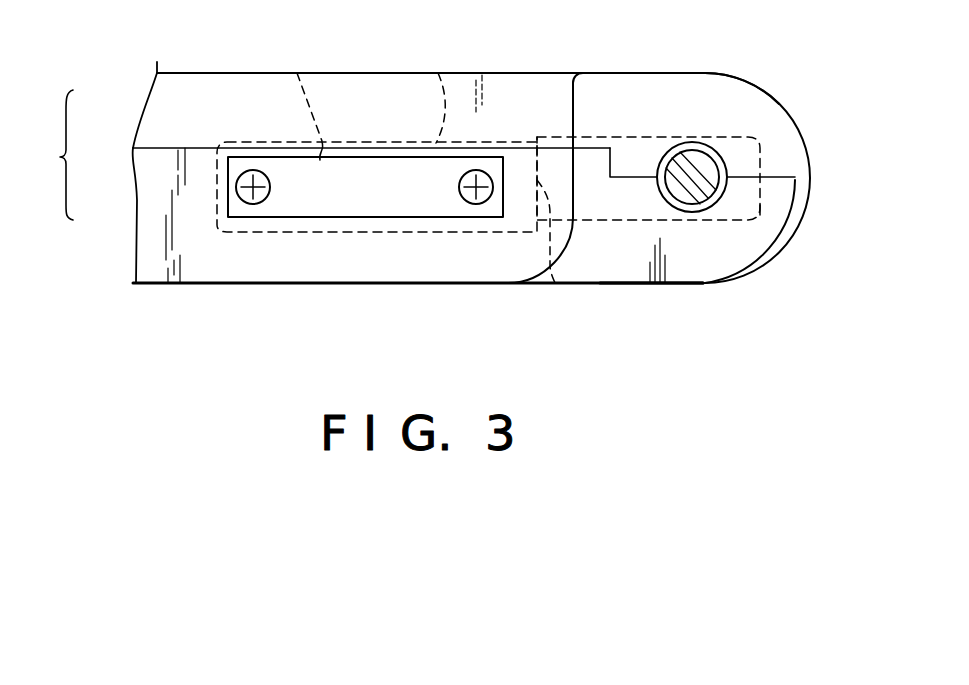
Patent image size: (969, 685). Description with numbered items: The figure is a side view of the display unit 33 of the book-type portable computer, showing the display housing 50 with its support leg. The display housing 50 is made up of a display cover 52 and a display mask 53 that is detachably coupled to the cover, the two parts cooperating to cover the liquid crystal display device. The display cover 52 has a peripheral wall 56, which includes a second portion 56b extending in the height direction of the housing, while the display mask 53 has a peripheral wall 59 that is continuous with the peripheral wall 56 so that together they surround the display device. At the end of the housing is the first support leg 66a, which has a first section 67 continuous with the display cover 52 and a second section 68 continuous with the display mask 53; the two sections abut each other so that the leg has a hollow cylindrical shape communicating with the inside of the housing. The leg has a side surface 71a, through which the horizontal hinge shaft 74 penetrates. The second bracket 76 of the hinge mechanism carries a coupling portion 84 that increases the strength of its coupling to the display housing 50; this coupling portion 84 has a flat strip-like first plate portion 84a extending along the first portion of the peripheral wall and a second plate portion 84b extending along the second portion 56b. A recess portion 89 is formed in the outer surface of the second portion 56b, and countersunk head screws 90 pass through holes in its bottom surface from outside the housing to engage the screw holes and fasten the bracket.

The display housing 50 is at (48, 155).
The display mask 53 is at (153, 113).
The display cover 52 is at (155, 196).
The peripheral wall of display mask 59 is at (222, 81).
The peripheral wall of display cover 56 is at (346, 262).
The second portion of peripheral wall 56b is at (182, 260).
The display unit 33 is at (377, 72).
The second plate portion 84b is at (297, 73).
The coupling portion 84 is at (438, 73).
The first plate portion 84a is at (554, 284).
The recess portion 89 is at (424, 208).
The countersunk head screws 90 is at (262, 203).
The second section 68 is at (607, 88).
The first support leg 66a is at (731, 93).
The hinge shaft 74 is at (713, 163).
The second bracket 76 is at (793, 202).
The side surface 71a is at (757, 238).
The first section 67 is at (683, 266).